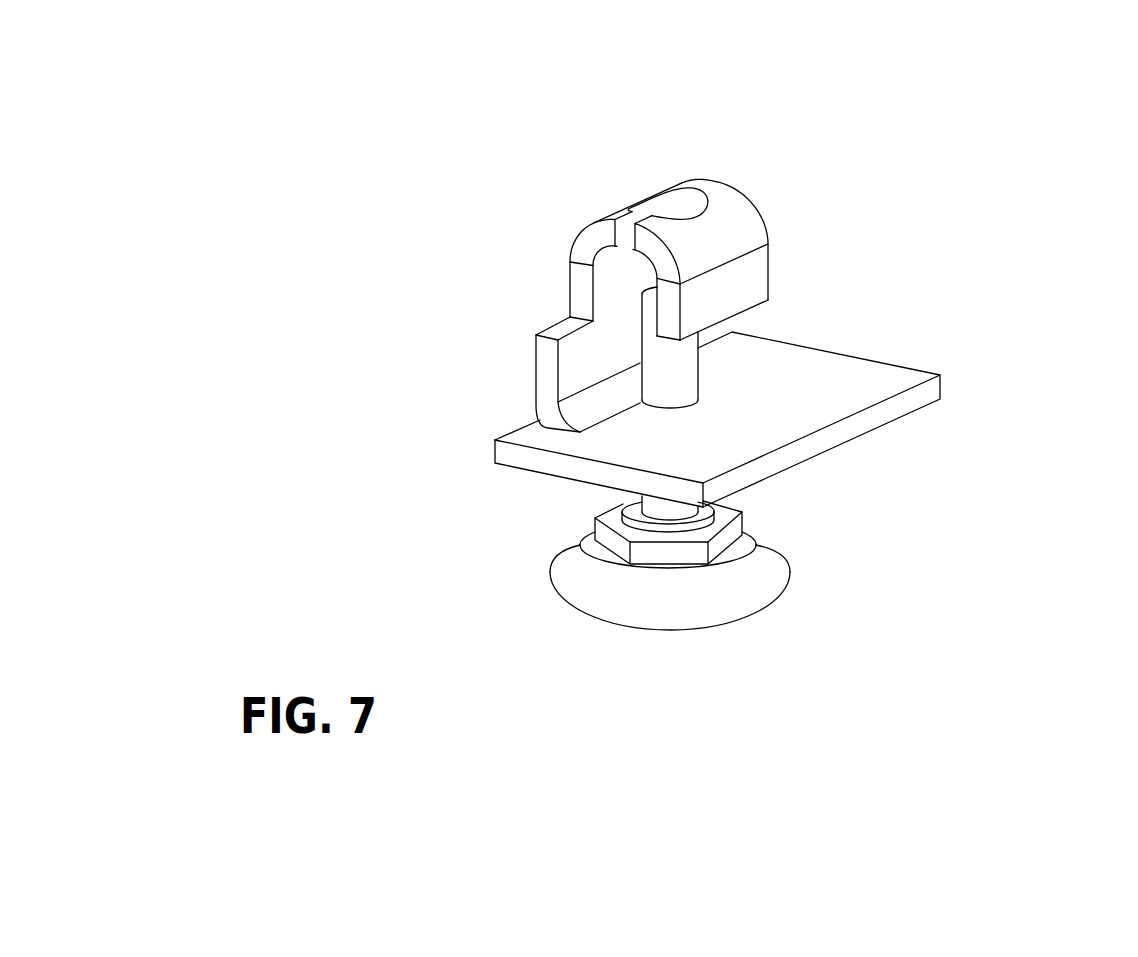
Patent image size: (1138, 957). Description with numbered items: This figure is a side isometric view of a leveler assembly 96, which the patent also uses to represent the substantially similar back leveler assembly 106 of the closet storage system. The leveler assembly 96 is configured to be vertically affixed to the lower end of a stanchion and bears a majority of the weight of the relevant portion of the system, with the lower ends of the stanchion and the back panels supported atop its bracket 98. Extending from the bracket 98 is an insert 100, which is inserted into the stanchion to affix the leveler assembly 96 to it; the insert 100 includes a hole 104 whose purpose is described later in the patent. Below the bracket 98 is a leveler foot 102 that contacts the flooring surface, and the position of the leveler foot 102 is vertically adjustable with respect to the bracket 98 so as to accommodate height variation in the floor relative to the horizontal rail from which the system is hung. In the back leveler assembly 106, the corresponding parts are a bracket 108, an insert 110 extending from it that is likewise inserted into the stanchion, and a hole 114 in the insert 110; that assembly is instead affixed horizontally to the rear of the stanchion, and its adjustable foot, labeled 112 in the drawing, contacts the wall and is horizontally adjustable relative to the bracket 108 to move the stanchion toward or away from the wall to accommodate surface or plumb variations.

The leveler assembly 96 is at (777, 383).
The back leveler assembly 106 is at (840, 355).
The bracket 98 is at (777, 419).
The bracket 108 is at (863, 432).
The insert 100 is at (720, 245).
The insert 110 is at (758, 208).
The leveler foot 102 is at (726, 498).
The base 112 is at (743, 607).
The hole 104 is at (634, 141).
The hole 114 is at (673, 205).